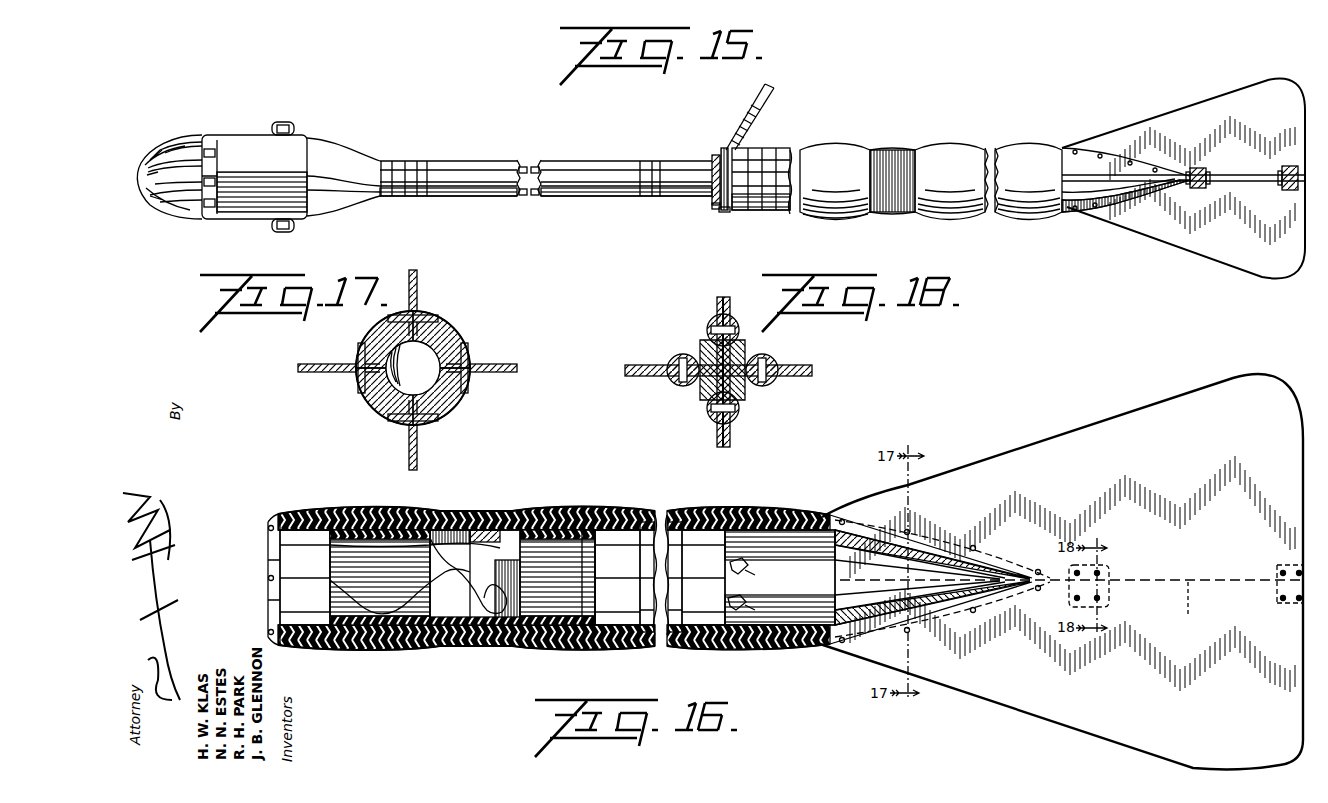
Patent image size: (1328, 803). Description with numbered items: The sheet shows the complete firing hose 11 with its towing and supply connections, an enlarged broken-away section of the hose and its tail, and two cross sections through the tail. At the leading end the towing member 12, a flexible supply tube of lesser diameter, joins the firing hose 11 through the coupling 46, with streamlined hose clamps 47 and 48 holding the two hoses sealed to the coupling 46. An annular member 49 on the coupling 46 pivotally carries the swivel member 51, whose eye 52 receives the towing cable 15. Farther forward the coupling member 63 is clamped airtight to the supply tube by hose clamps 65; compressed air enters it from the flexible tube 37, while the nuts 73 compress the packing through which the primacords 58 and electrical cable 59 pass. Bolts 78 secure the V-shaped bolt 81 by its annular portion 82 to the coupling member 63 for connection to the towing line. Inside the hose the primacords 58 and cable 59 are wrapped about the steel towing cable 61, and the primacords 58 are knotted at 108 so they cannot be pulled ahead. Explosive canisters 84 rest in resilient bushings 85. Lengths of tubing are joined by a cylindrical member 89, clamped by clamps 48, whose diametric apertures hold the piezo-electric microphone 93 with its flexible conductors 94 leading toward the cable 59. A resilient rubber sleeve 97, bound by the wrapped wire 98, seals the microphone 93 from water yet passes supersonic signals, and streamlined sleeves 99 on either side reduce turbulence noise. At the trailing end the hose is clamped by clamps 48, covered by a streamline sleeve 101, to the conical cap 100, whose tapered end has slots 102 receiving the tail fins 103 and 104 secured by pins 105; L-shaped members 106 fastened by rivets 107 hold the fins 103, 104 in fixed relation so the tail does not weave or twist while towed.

In FIG. 15, the firing hose 11 is at (750, 147).
In FIG. 16, the firing hose 11 is at (673, 513).
In FIG. 15, the towing member 12 is at (544, 160).
In FIG. 15, the towing cable 15 is at (744, 98).
In FIG. 15, the flexible tube 37 is at (160, 202).
In FIG. 15, the coupling 46 is at (712, 162).
In FIG. 15, the hose clamp 47 is at (646, 160).
In FIG. 15, the hose clamp 48 is at (776, 148).
In FIG. 16, the hose clamp 48 is at (370, 645).
In FIG. 15, the annular member 49 is at (712, 206).
In FIG. 15, the swivel member 51 is at (724, 212).
In FIG. 15, the eye 52 is at (722, 148).
In FIG. 15, the primacord 58 is at (178, 212).
In FIG. 16, the primacord 58 is at (396, 572).
In FIG. 15, the electrical cable 59 is at (160, 165).
In FIG. 16, the electrical cable 59 is at (425, 580).
In FIG. 15, the steel towing cable 61 is at (527, 196).
In FIG. 15, the coupling member 63 is at (358, 156).
In FIG. 15, the hose clamp 65 is at (417, 160).
In FIG. 15, the nut 73 is at (206, 150).
In FIG. 15, the bolt 78 is at (291, 123).
In FIG. 15, the V-shaped bolt 81 is at (177, 148).
In FIG. 15, the annular portion 82 is at (262, 150).
In FIG. 16, the canister 84 is at (652, 647).
In FIG. 16, the resilient bushing 85 is at (303, 528).
In FIG. 16, the cylindrical member 89 is at (594, 528).
In FIG. 16, the microphone 93 is at (478, 530).
In FIG. 16, the flexible conductor 94 is at (482, 640).
In FIG. 15, the resilient sleeve 97 is at (894, 216).
In FIG. 16, the resilient sleeve 97 is at (452, 646).
In FIG. 15, the flexible rod or wire 98 is at (892, 150).
In FIG. 16, the flexible rod or wire 98 is at (455, 520).
In FIG. 15, the streamlined sleeve 99 is at (840, 148).
In FIG. 16, the streamlined sleeve 99 is at (400, 512).
In FIG. 15, the conical cap 100 is at (1090, 148).
In FIG. 17, the conical cap 100 is at (463, 340).
In FIG. 16, the conical cap 100 is at (822, 614).
In FIG. 15, the streamline sleeve 101 is at (1030, 216).
In FIG. 16, the streamline sleeve 101 is at (790, 518).
In FIG. 17, the slot 102 is at (468, 360).
In FIG. 16, the slot 102 is at (868, 526).
In FIG. 15, the tail fin 103 is at (1271, 92).
In FIG. 17, the tail fin 103 is at (417, 292).
In FIG. 18, the tail fin 103 is at (732, 441).
In FIG. 16, the tail fin 103 is at (1228, 386).
In FIG. 15, the tail fin 104 is at (1242, 182).
In FIG. 17, the tail fin 104 is at (308, 372).
In FIG. 18, the tail fin 104 is at (625, 368).
In FIG. 16, the tail fin 104 is at (1071, 606).
In FIG. 15, the pin 105 is at (1110, 158).
In FIG. 17, the pin 105 is at (430, 316).
In FIG. 16, the pin 105 is at (975, 546).
In FIG. 15, the L-shaped member 106 is at (1208, 174).
In FIG. 18, the L-shaped member 106 is at (710, 312).
In FIG. 16, the L-shaped member 106 is at (1110, 576).
In FIG. 15, the rivet 107 is at (1290, 170).
In FIG. 18, the rivet 107 is at (703, 345).
In FIG. 16, the rivet 107 is at (1100, 568).
In FIG. 16, the knot 108 is at (746, 582).